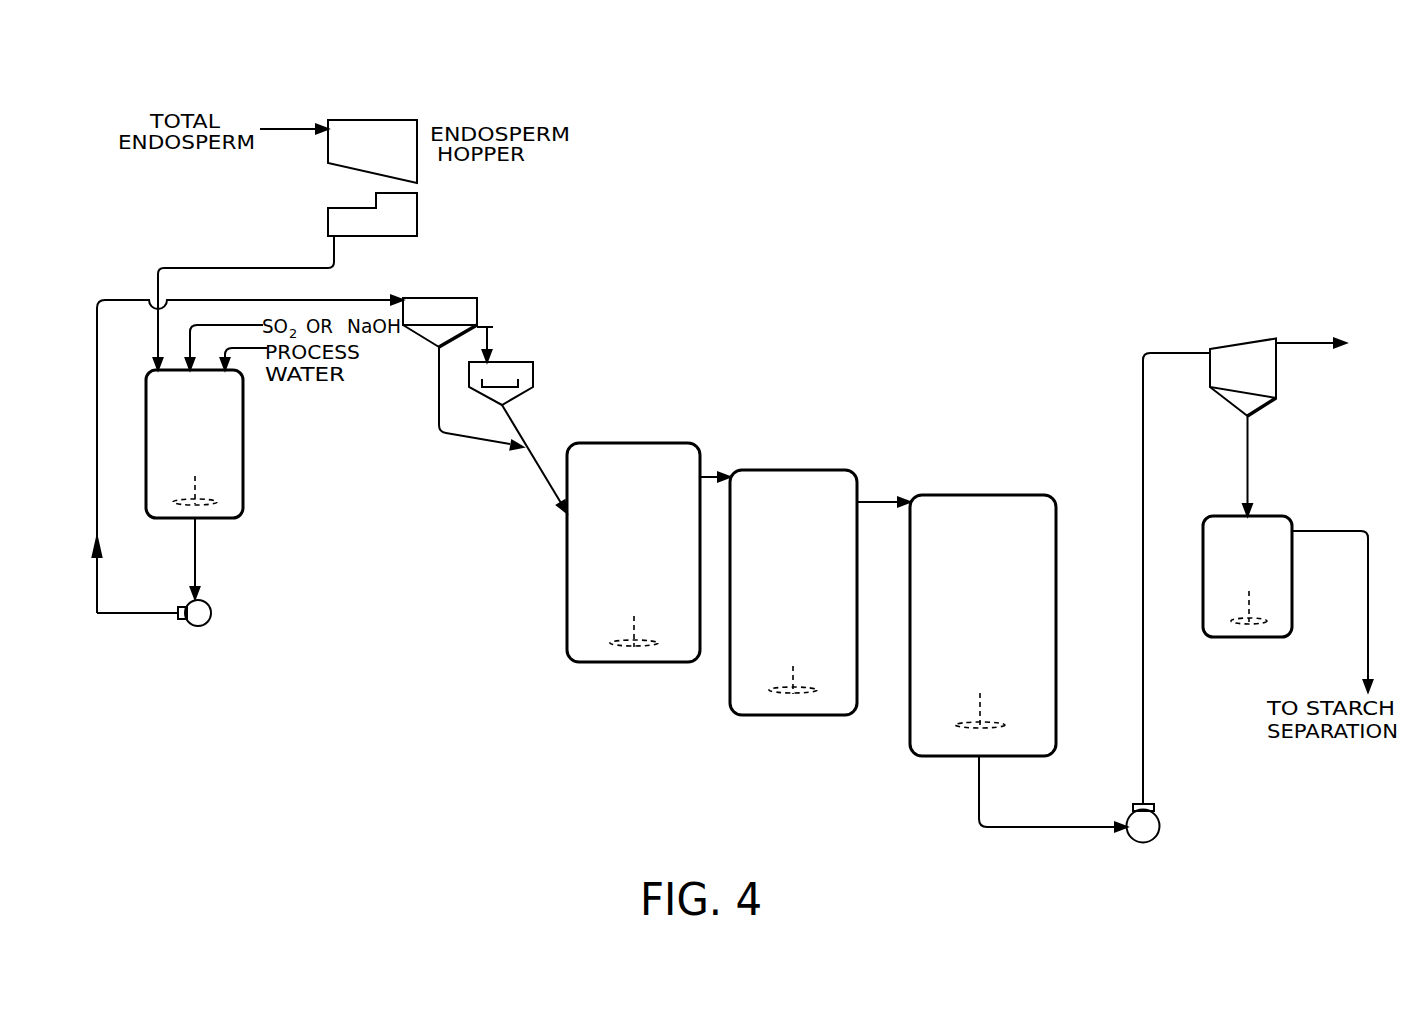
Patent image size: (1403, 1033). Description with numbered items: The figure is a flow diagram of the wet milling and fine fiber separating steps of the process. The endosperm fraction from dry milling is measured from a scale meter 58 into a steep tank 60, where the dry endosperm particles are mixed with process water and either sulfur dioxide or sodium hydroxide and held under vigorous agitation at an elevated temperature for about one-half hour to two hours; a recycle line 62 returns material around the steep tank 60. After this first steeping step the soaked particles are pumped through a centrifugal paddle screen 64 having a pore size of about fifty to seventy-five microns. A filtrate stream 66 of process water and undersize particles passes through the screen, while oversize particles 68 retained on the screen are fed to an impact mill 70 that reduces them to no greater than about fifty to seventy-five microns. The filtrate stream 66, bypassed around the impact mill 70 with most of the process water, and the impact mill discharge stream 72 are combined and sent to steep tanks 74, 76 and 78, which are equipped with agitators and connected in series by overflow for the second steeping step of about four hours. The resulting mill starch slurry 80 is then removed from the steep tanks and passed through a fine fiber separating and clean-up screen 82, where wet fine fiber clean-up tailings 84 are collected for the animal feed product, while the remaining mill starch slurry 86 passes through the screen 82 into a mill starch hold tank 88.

The scale meter 58 is at (418, 219).
The steep tank 60 is at (243, 463).
The recycle line 62 is at (98, 488).
The centrifugal paddle screen 64 is at (465, 299).
The filtrate stream 66 is at (433, 412).
The oversize particles 68 is at (493, 340).
The impact mill 70 is at (537, 372).
The impact mill discharge stream 72 is at (518, 428).
The steep tank 74 is at (670, 443).
The steep tank 76 is at (828, 469).
The steep tank 78 is at (1028, 495).
The mill starch slurry 80 is at (1087, 830).
The fine fiber separating and clean-up screen 82 is at (1235, 345).
The wet fine fiber clean-up tailings 84 is at (1310, 337).
The mill starch slurry 86 is at (1252, 464).
The mill starch hold tank 88 is at (1203, 570).